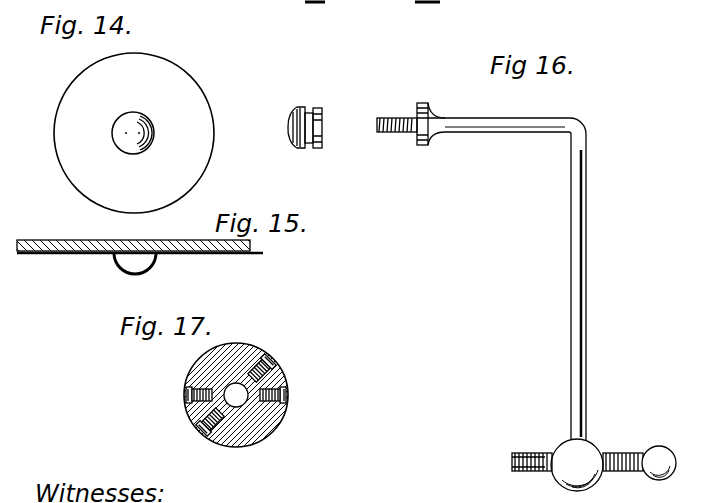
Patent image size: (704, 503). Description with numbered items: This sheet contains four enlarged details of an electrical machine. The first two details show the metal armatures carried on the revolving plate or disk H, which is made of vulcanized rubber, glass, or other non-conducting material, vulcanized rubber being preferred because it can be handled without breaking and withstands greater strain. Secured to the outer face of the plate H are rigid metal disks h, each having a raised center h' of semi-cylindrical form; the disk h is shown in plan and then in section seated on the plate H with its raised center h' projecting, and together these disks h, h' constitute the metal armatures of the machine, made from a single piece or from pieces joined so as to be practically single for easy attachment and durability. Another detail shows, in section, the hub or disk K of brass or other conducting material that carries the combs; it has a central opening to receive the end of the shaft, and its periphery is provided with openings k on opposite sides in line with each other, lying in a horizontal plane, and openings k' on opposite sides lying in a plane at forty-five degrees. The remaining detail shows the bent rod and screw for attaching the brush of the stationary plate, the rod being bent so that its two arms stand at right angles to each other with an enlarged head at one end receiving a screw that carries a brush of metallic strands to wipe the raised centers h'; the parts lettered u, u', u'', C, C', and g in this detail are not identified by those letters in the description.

In FIG. 14, the metal disk h is at (134, 133).
In FIG. 15, the metal disk h is at (157, 267).
In FIG. 14, the raised center h' is at (143, 130).
In FIG. 15, the raised center h' is at (136, 272).
In FIG. 15, the circular disk or plate H is at (140, 238).
In FIG. 17, the opening k is at (233, 396).
In FIG. 17, the opening k' is at (234, 395).
In FIG. 17, the hub or disk K is at (236, 399).
In FIG. 16, the threaded rod end u is at (396, 114).
In FIG. 16, the collar u' is at (436, 115).
In FIG. 16, the knob u'' is at (305, 116).
In FIG. 16, the bent rod C is at (519, 279).
In FIG. 16, the ball joint C' is at (557, 465).
In FIG. 16, the threaded shank with ball g is at (639, 457).